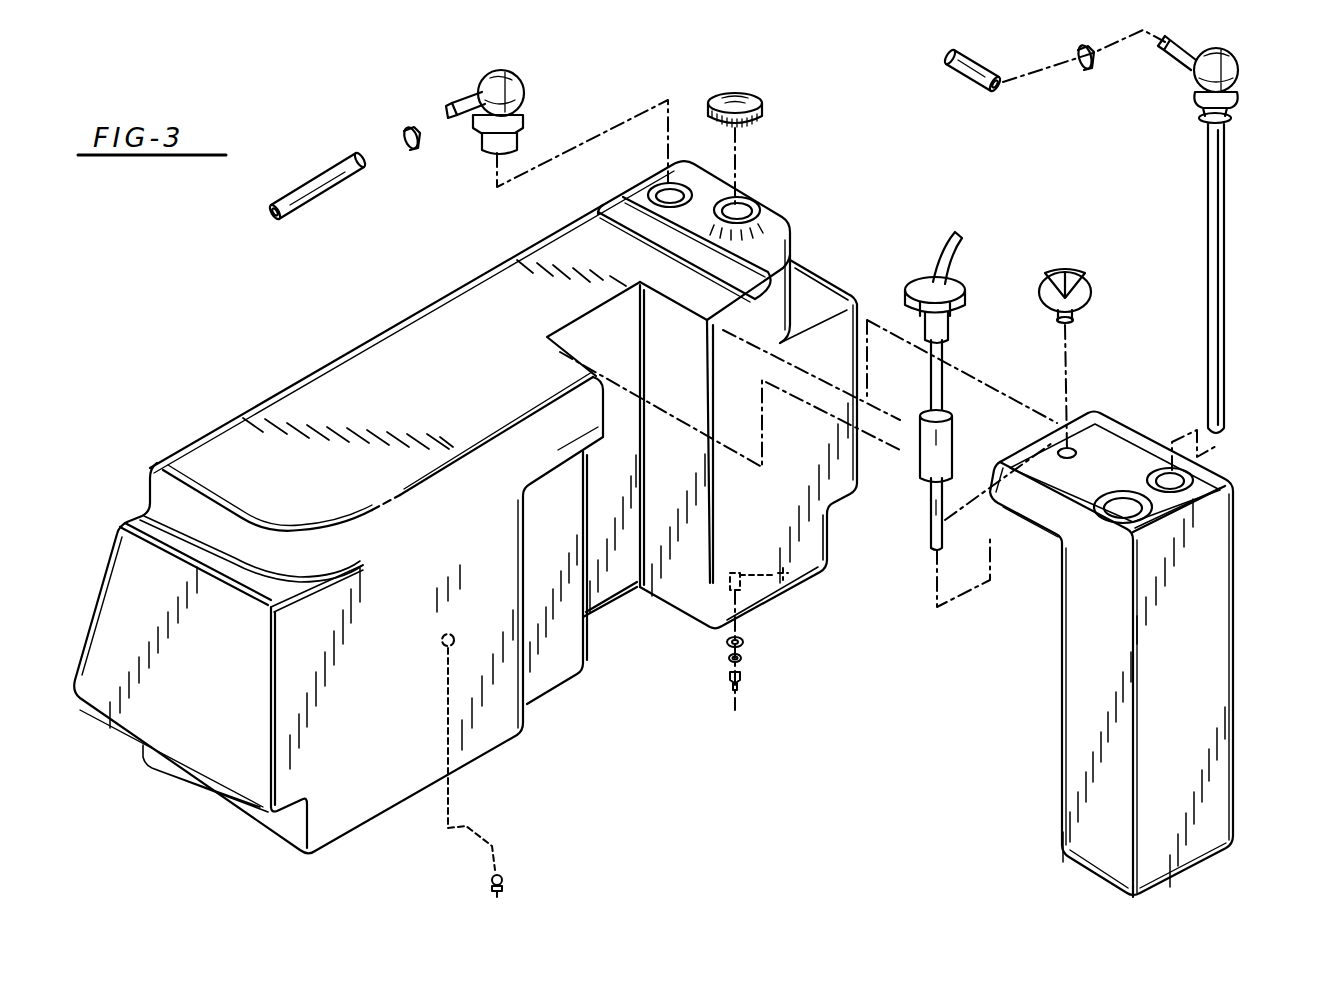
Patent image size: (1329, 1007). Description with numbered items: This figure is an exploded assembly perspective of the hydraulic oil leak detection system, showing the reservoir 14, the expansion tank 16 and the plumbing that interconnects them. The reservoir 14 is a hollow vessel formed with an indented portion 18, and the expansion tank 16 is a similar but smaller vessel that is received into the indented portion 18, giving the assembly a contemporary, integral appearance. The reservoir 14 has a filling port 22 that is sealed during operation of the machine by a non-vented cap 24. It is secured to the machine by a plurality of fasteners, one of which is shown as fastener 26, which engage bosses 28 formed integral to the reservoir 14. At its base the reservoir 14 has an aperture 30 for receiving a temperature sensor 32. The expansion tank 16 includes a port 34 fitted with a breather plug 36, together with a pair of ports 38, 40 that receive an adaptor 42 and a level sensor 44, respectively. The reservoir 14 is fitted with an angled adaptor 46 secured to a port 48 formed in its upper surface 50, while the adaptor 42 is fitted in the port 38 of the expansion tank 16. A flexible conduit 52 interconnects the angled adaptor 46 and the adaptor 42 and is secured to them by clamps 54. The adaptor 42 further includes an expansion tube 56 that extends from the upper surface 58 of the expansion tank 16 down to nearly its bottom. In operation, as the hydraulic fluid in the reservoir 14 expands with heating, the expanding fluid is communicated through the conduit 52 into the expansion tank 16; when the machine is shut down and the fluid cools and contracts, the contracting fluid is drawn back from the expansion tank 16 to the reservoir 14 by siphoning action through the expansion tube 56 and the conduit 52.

The reservoir 14 is at (236, 438).
The expansion tank 16 is at (1210, 620).
The indented portion 18 is at (683, 568).
The filling port 22 is at (746, 204).
The non-vented cap 24 is at (750, 103).
The fastener 26 is at (742, 685).
The bosses 28 is at (788, 590).
The aperture 30 is at (447, 660).
The temperature sensor 32 is at (505, 886).
The port 34 is at (1067, 450).
The breather plug 36 is at (1090, 295).
The port 38 is at (1177, 483).
The port 40 is at (1123, 512).
The adaptor 42 is at (1237, 108).
The level sensor 44 is at (963, 282).
The angled adaptor 46 is at (513, 72).
The port 48 is at (668, 192).
The upper surface 50 is at (598, 212).
The flexible conduit 52 is at (348, 188).
The clamps 54 is at (417, 142).
The expansion tube 56 is at (1227, 263).
The upper surface 58 is at (1173, 500).